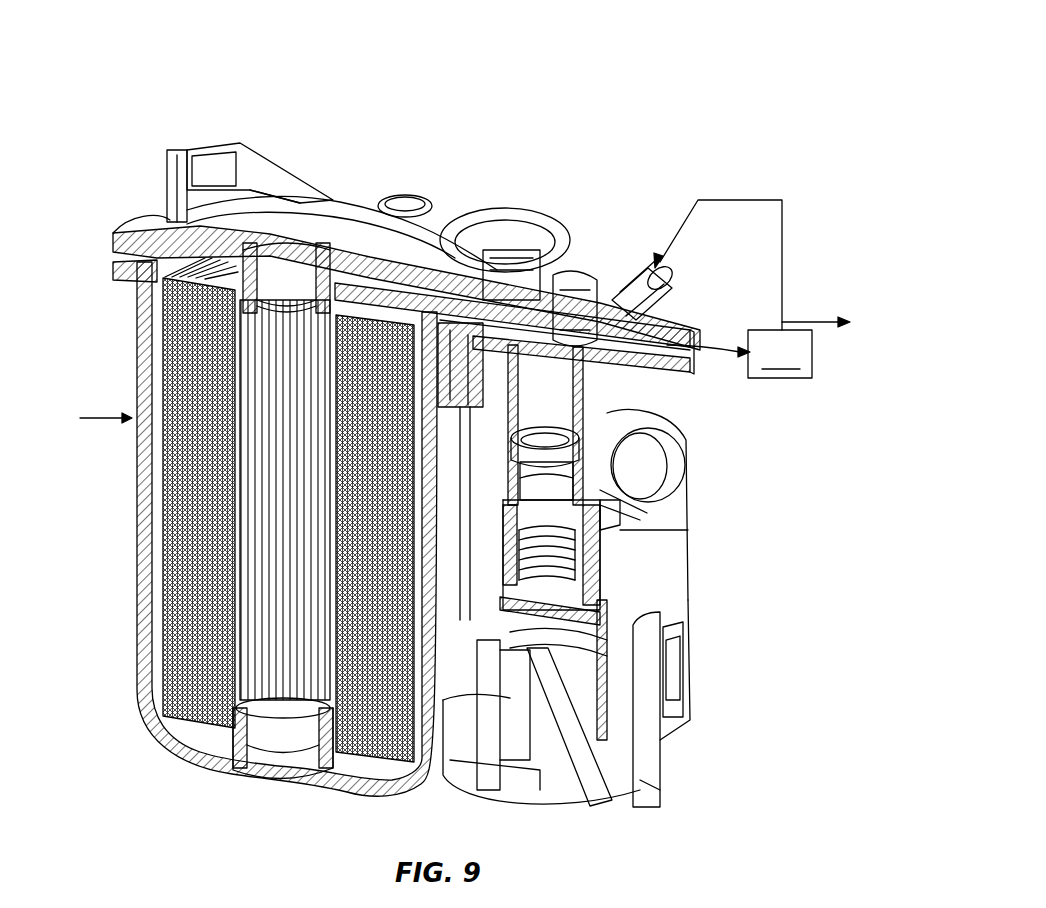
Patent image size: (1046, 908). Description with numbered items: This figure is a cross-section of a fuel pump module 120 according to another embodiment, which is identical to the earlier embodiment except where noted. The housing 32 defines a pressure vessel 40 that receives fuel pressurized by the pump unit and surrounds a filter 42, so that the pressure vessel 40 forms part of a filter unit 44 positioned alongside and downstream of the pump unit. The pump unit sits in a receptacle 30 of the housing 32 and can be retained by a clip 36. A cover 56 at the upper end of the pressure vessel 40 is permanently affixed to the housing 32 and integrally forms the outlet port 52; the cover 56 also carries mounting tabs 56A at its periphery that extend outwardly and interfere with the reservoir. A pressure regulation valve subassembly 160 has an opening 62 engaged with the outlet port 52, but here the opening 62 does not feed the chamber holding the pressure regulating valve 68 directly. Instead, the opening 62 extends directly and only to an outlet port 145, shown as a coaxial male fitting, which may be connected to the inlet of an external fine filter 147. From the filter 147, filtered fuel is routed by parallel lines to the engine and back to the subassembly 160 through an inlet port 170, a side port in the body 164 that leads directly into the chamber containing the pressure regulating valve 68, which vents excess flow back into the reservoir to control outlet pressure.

The fuel pump module 120 is at (181, 76).
The mounting tab 56A is at (175, 162).
The cover 56 is at (340, 217).
The outlet port 52 is at (525, 292).
The opening 62 is at (572, 305).
The inlet port 170 is at (632, 274).
The external filter 147 is at (772, 289).
The outlet port 145 is at (675, 365).
The body 164 is at (596, 447).
The pressure regulating valve 68 is at (568, 478).
The receptacle 30 is at (675, 504).
The pressure regulation valve subassembly 160 is at (625, 536).
The clip 36 is at (677, 662).
The housing 32 is at (138, 317).
The pressure vessel 40 is at (158, 364).
The filter 42 is at (175, 468).
The filter unit 44 is at (86, 422).